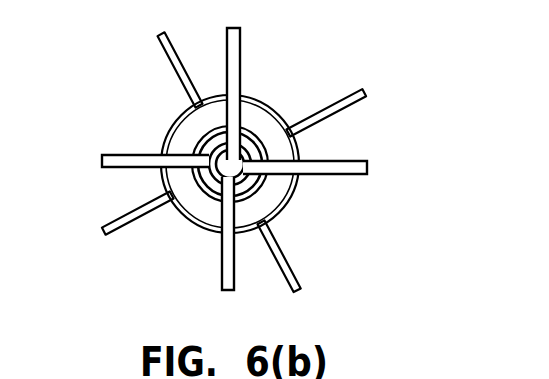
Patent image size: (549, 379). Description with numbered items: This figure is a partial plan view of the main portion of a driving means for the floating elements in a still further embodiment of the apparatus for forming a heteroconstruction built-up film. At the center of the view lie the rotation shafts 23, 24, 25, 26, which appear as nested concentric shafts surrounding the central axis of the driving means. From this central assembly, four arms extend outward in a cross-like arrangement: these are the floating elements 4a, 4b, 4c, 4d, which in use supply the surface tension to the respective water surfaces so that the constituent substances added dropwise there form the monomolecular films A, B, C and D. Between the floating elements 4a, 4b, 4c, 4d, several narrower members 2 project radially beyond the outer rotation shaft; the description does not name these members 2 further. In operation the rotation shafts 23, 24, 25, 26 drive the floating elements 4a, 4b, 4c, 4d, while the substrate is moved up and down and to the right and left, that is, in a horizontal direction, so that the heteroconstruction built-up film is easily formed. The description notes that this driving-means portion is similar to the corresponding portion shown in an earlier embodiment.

The blade 2 is at (167, 52).
The floating element 4a is at (242, 45).
The floating element 4b is at (353, 175).
The floating element 4c is at (222, 278).
The floating element 4d is at (118, 155).
The rotation shaft 23 is at (241, 160).
The rotation shaft 24 is at (258, 187).
The rotation shaft 25 is at (213, 185).
The rotation shaft 26 is at (203, 140).